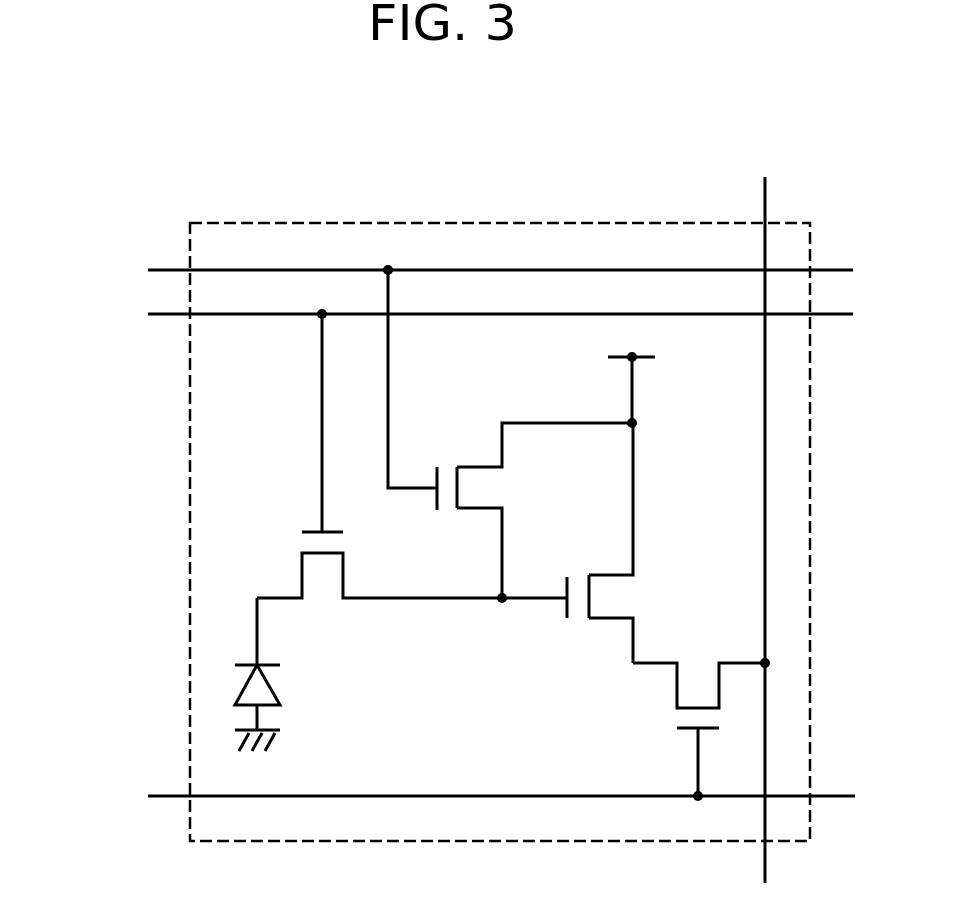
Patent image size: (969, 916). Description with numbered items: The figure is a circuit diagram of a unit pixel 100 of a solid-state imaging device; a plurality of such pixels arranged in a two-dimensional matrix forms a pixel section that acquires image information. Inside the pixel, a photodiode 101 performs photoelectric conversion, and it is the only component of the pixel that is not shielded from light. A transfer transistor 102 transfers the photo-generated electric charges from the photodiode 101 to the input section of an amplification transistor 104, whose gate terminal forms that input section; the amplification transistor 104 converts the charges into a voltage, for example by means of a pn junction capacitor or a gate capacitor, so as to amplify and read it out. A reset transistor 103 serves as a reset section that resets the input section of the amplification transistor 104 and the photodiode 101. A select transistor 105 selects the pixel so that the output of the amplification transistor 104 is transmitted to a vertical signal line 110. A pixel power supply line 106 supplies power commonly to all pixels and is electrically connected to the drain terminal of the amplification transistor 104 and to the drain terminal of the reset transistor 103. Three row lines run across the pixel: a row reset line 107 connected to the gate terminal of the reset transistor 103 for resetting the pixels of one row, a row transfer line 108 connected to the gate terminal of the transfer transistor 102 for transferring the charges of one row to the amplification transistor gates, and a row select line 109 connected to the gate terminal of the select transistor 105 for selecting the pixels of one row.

The unit pixel 100 is at (188, 564).
The photodiode 101 is at (282, 688).
The transfer transistor 102 is at (350, 563).
The reset transistor 103 is at (497, 490).
The amplification transistor 104 is at (630, 598).
The select transistor 105 is at (669, 698).
The pixel power supply line 106 is at (655, 356).
The row reset line 107 is at (148, 270).
The row transfer line 108 is at (148, 314).
The row select line 109 is at (148, 796).
The vertical signal line 110 is at (765, 180).